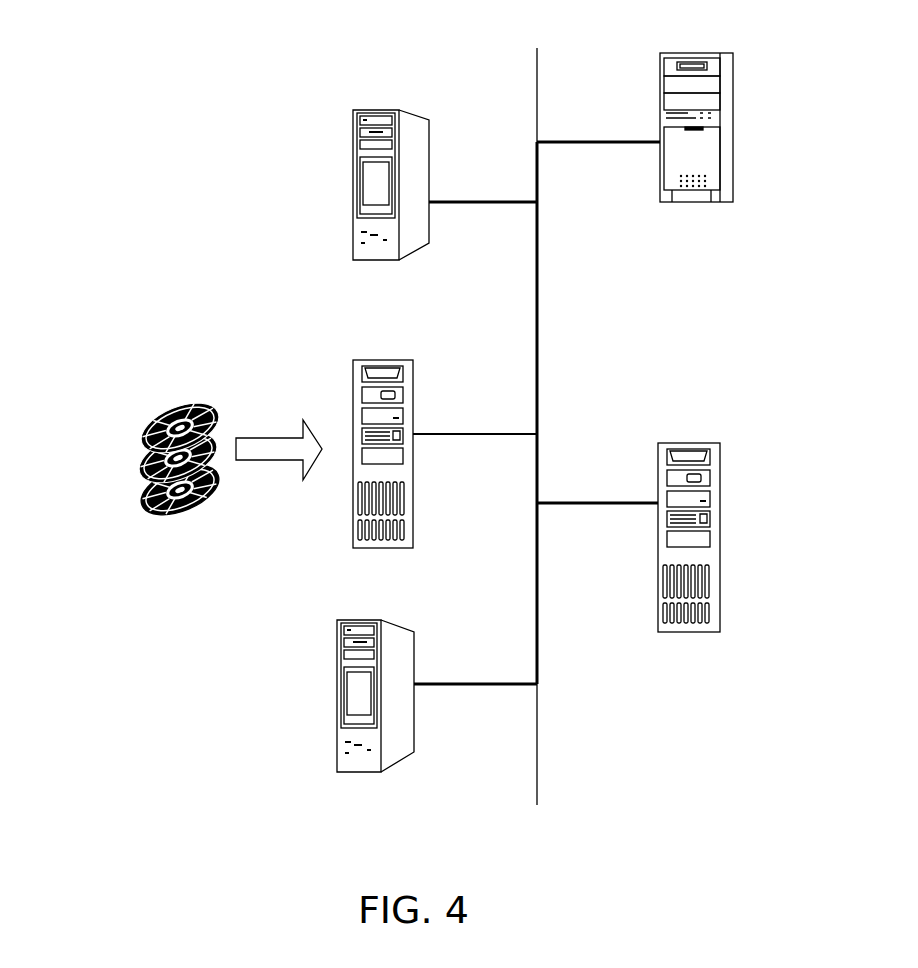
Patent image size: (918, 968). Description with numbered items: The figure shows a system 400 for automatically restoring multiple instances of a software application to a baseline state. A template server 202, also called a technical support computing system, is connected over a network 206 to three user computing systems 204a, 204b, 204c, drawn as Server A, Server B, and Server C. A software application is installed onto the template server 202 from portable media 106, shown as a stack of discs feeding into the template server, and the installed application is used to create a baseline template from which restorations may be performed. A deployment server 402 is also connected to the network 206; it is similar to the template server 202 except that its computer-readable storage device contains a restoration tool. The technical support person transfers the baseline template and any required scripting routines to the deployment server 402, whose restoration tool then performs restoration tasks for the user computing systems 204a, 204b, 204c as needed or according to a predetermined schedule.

The system 400 is at (90, 75).
The portable media 106 is at (133, 465).
The template server 202 is at (352, 490).
The user computing system 204a is at (337, 698).
The user computing system 204b is at (722, 534).
The user computing system 204c is at (735, 142).
The network 206 is at (537, 322).
The deployment server 402 is at (353, 200).